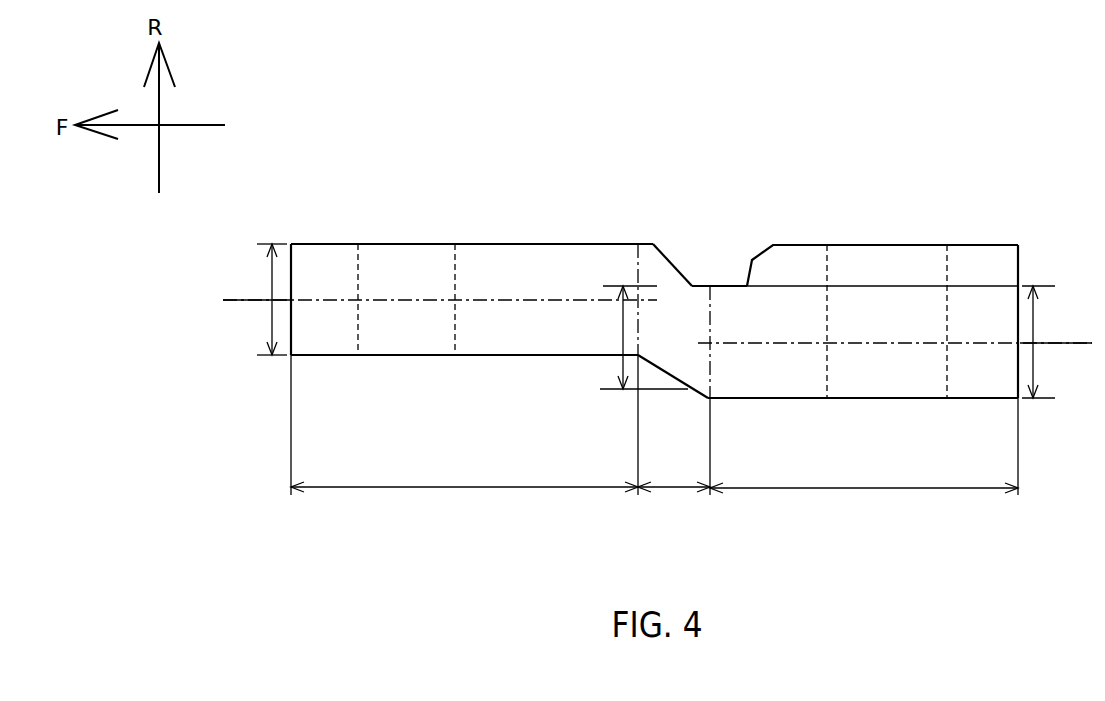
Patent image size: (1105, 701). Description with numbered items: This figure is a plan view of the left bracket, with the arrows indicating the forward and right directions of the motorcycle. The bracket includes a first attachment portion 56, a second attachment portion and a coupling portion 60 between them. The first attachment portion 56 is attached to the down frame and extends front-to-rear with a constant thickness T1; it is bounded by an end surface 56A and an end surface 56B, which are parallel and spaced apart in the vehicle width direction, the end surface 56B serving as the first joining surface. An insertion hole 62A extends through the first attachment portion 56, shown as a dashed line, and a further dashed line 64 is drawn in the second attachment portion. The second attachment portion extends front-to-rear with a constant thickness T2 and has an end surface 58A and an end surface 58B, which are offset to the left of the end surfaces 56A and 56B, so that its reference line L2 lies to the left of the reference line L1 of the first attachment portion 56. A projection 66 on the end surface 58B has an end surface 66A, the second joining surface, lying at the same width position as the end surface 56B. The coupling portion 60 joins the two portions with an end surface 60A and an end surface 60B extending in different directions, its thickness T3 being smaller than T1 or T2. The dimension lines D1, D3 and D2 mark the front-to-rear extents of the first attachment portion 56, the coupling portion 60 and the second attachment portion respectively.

The first attachment portion 56 is at (472, 289).
The end surface 56A is at (342, 358).
The end surface 56B is at (490, 243).
The insertion hole 62A is at (360, 257).
The coupling portion 60 is at (679, 326).
The end surface 60A is at (700, 393).
The end surface 60B is at (678, 263).
The end surface 58A is at (765, 400).
The end surface 58B is at (738, 286).
The projection 66 is at (773, 260).
The end surface 66A is at (980, 243).
The boundary line 64 is at (827, 263).
The thickness of the first attachment portion T1 is at (272, 268).
The reference line L1 is at (245, 302).
The thickness of the coupling portion T3 is at (623, 337).
The thickness of the second attachment portion T2 is at (1037, 323).
The reference line L2 is at (1060, 345).
The length of first plate portion D1 is at (464, 380).
The length of stepped portion D3 is at (674, 401).
The length of second plate portion D2 is at (864, 458).